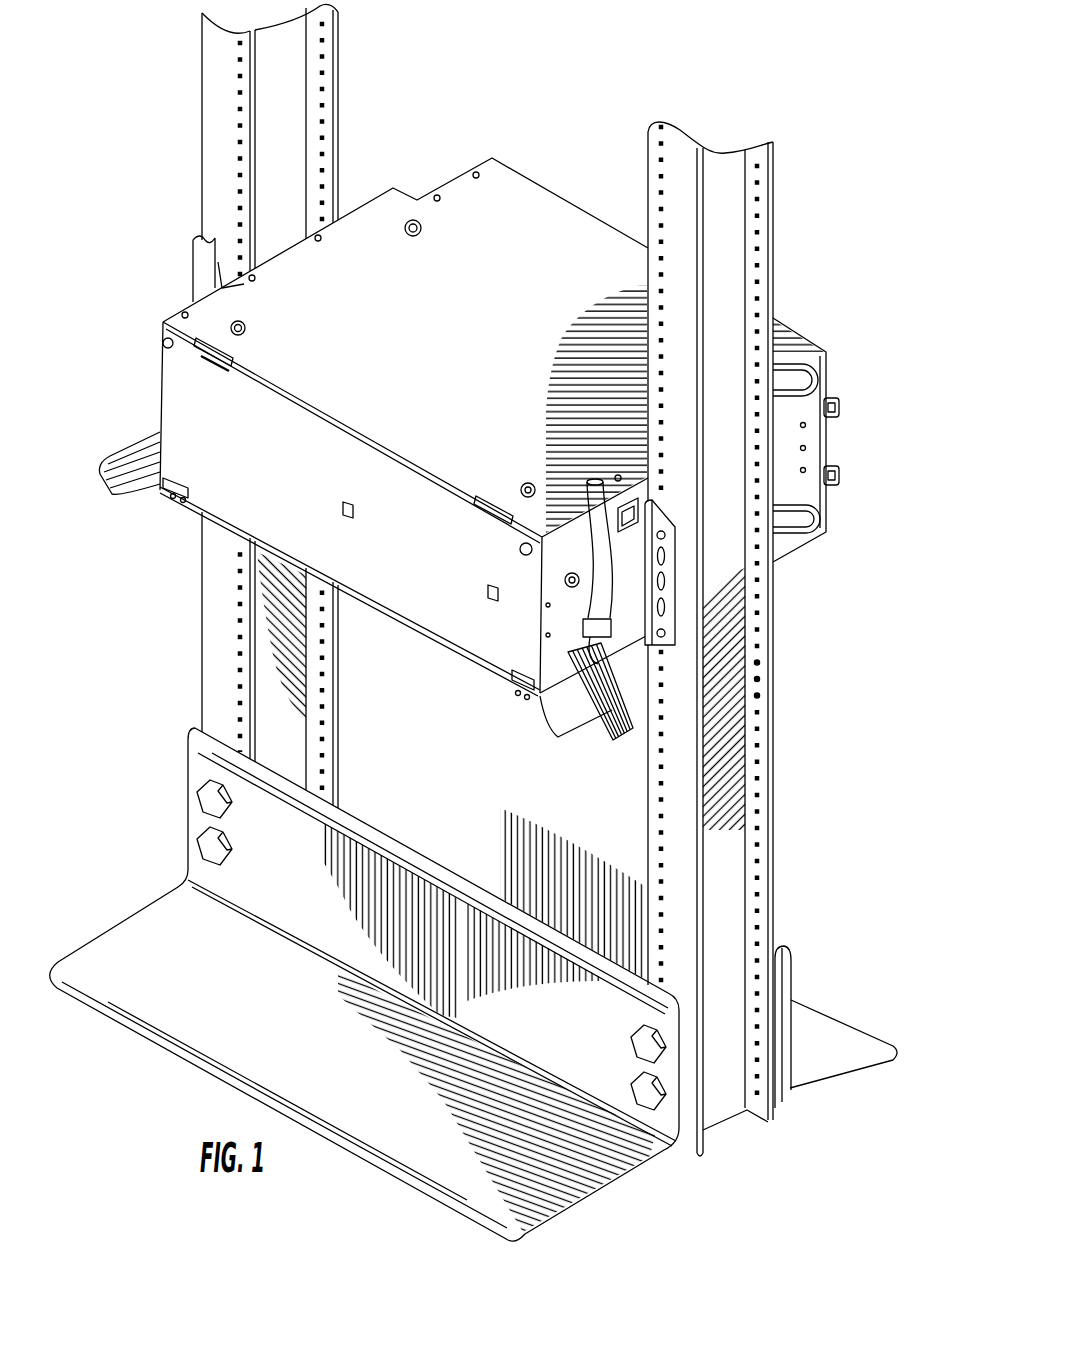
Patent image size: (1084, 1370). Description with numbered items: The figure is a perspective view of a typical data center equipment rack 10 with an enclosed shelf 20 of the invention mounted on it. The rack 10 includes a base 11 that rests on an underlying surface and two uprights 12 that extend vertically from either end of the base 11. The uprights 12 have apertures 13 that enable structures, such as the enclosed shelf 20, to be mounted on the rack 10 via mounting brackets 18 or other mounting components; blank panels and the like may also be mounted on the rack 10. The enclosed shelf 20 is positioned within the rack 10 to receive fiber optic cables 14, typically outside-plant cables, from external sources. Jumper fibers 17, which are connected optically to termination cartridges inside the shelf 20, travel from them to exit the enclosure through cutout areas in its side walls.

The data center equipment rack 10 is at (473, 622).
The base 11 is at (818, 1037).
The uprights 12 is at (278, 667).
The apertures 13 is at (762, 693).
The fiber optic cables 14 is at (200, 280).
The jumper fibers 17 is at (600, 730).
The mounting brackets 18 is at (667, 597).
The enclosed shelf 20 is at (557, 189).